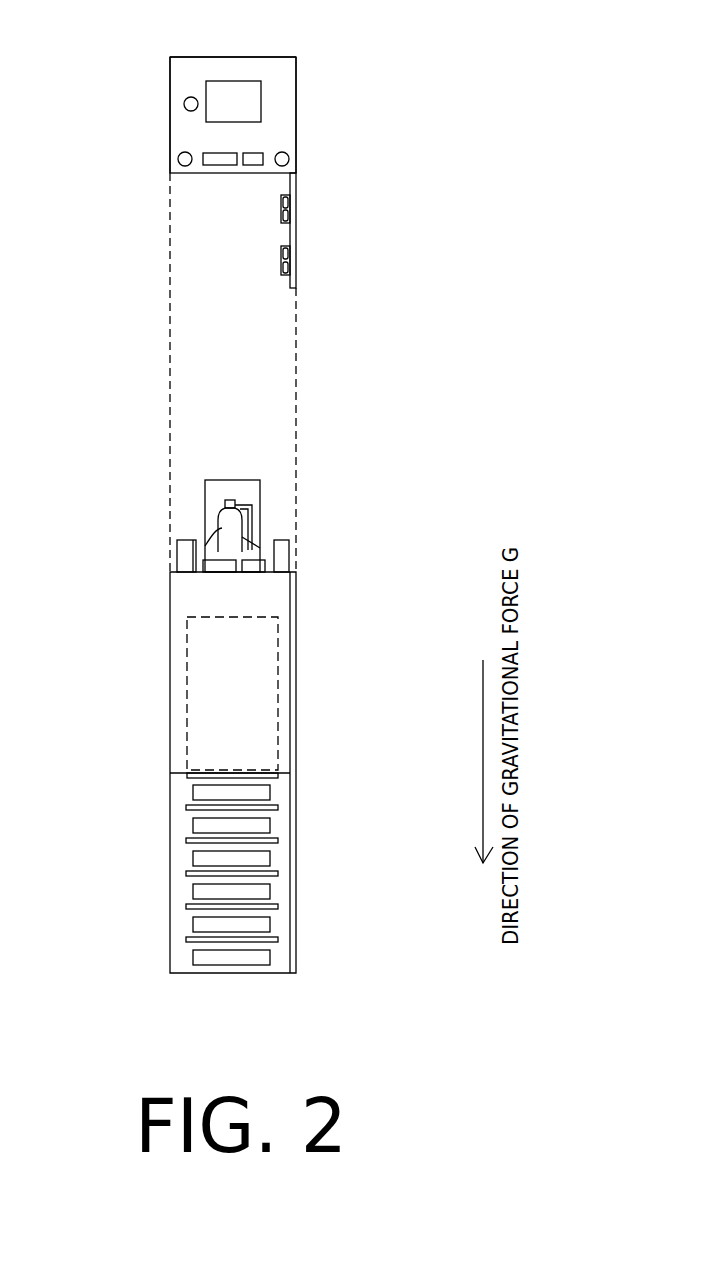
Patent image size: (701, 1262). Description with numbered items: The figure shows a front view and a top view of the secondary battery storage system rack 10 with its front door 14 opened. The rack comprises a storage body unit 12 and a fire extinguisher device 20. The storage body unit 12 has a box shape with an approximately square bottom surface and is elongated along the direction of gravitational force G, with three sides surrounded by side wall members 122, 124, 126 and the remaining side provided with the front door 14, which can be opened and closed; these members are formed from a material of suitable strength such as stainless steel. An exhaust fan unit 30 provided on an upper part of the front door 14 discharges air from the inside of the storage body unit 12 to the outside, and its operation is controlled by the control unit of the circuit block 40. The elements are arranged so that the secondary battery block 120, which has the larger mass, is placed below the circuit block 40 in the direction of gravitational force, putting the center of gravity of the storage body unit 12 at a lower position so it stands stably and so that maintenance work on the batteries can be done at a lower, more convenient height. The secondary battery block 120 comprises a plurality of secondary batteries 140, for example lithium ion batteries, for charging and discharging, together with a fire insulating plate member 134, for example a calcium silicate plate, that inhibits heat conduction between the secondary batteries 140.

The secondary battery storage system rack 10 is at (272, 72).
The storage body unit 12 is at (277, 55).
The front door 14 is at (292, 283).
The fire extinguisher device 20 is at (247, 100).
The exhaust fan unit 30 is at (273, 258).
The circuit block 40 is at (258, 637).
The secondary battery block 120 is at (283, 897).
The side wall member 122 is at (297, 142).
The side wall member 124 is at (170, 110).
The side wall member 126 is at (215, 57).
The fire insulating plate member 134 is at (203, 942).
The secondary battery 140 is at (252, 960).